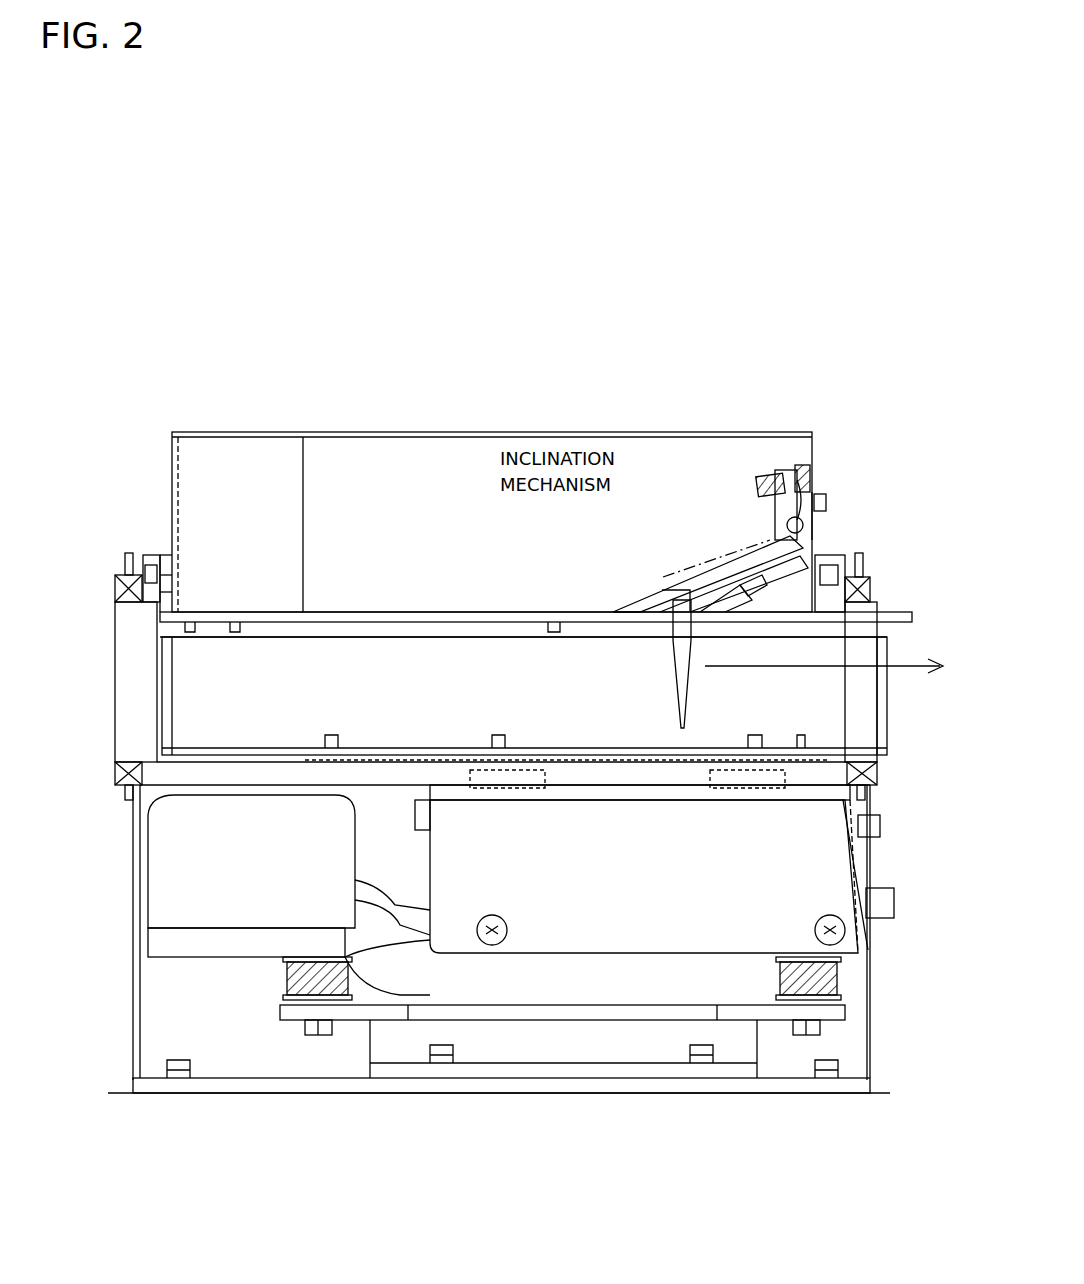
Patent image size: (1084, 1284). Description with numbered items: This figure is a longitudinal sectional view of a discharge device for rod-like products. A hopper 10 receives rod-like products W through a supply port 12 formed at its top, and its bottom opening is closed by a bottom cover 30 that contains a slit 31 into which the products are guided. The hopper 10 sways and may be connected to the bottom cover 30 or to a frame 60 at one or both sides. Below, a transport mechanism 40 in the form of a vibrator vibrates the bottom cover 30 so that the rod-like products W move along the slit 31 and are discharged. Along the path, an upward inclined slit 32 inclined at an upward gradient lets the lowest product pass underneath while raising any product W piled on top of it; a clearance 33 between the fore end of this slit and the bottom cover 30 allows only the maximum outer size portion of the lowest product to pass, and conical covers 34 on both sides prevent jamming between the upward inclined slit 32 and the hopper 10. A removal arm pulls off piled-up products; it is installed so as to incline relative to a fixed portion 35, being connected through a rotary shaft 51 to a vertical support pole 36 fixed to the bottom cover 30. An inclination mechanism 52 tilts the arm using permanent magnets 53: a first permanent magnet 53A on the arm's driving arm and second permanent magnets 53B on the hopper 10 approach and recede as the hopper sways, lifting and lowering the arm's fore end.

The hopper 10 is at (172, 485).
The supply port 12 is at (497, 428).
The bottom cover 30 is at (512, 611).
The slit 31 is at (478, 611).
The upward inclined slit 32 is at (650, 598).
The clearance 33 is at (630, 616).
The conical cover 34 is at (747, 608).
The fixed portion 35 is at (813, 500).
The support pole 36 is at (806, 520).
The transport mechanism 40 is at (710, 928).
The rotary shaft 51 is at (788, 524).
The inclination mechanism 52 is at (745, 481).
The permanent magnets 53 is at (858, 350).
The first permanent magnet 53A is at (773, 476).
The second permanent magnet 53B is at (800, 466).
The frame 60 is at (150, 565).
The rod-like product W is at (672, 666).